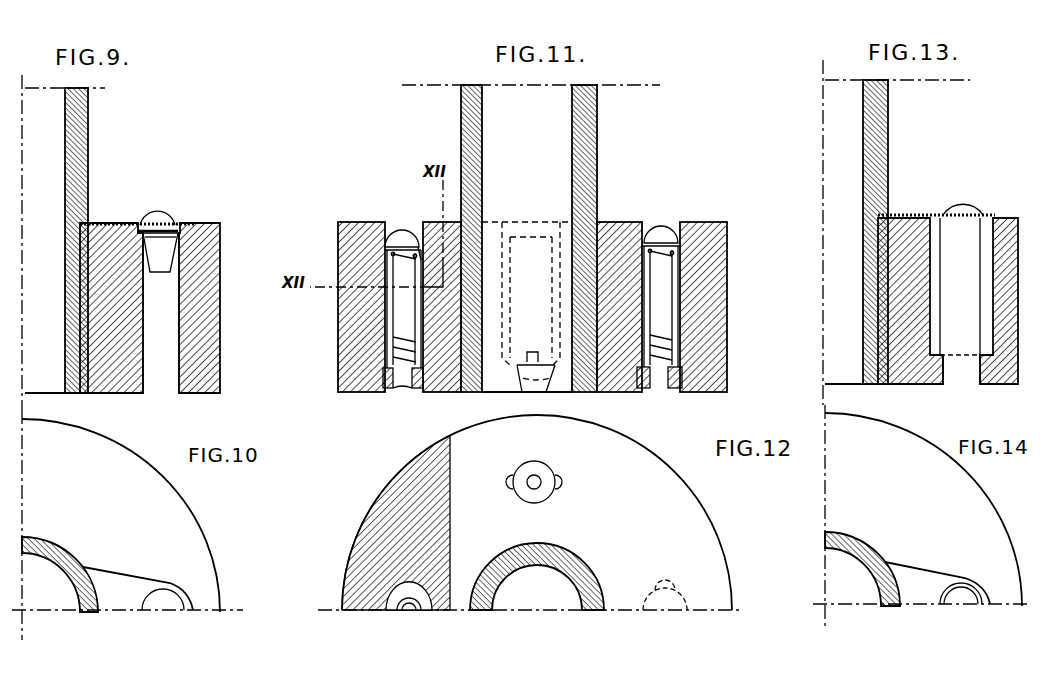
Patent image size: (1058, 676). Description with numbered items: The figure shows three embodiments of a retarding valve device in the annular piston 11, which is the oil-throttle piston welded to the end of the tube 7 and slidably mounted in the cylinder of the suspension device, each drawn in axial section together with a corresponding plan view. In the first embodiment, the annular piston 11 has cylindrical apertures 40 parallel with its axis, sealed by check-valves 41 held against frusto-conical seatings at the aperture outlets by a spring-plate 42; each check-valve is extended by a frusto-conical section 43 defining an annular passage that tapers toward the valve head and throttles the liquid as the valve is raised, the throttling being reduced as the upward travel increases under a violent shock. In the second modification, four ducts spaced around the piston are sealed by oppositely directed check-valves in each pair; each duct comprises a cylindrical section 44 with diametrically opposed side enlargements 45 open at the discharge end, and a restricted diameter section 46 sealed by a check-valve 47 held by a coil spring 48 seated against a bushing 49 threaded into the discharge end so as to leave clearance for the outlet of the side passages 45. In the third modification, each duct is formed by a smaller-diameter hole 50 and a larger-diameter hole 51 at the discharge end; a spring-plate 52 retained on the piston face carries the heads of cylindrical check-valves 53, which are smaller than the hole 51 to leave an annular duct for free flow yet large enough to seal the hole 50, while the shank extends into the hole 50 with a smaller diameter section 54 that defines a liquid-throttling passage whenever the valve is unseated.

In FIG. 9, the tube 7 is at (75, 163).
In FIG. 11, the tube 7 is at (598, 150).
In FIG. 13, the tube 7 is at (880, 146).
In FIG. 9, the annular piston 11 is at (208, 340).
In FIG. 11, the annular piston 11 is at (358, 276).
In FIG. 13, the annular piston 11 is at (1007, 363).
In FIG. 14, the annular piston 11 is at (982, 517).
In FIG. 9, the cylindrical apertures 40 is at (163, 368).
In FIG. 9, the check-valve 41 is at (165, 226).
In FIG. 9, the spring-plate 42 is at (103, 224).
In FIG. 10, the spring-plate 42 is at (120, 583).
In FIG. 9, the frusto-conical section 43 is at (176, 260).
In FIG. 11, the cylindrical section 44 is at (387, 256).
In FIG. 12, the cylindrical section 44 is at (431, 606).
In FIG. 11, the side enlargements 45 is at (400, 300).
In FIG. 12, the side enlargements 45 is at (398, 606).
In FIG. 11, the restricted diameter section 46 is at (394, 233).
In FIG. 11, the check-valve 47 is at (401, 232).
In FIG. 11, the coil spring 48 is at (436, 245).
In FIG. 11, the bushing 49 is at (405, 383).
In FIG. 12, the bushing 49 is at (531, 468).
In FIG. 13, the smaller-diameter hole 50 is at (943, 368).
In FIG. 13, the larger-diameter hole 51 is at (985, 309).
In FIG. 13, the spring-plate 52 is at (910, 214).
In FIG. 14, the spring-plate 52 is at (905, 572).
In FIG. 13, the cylindrical check-valve 53 is at (965, 262).
In FIG. 13, the smaller diameter section 54 is at (950, 360).